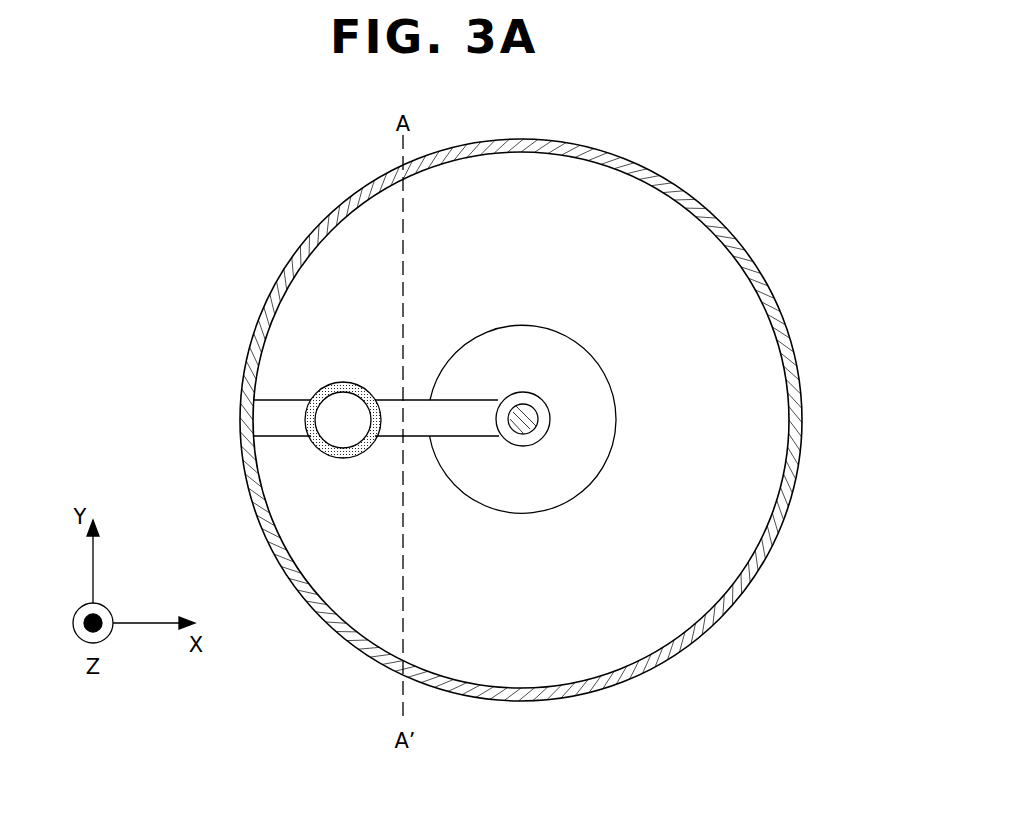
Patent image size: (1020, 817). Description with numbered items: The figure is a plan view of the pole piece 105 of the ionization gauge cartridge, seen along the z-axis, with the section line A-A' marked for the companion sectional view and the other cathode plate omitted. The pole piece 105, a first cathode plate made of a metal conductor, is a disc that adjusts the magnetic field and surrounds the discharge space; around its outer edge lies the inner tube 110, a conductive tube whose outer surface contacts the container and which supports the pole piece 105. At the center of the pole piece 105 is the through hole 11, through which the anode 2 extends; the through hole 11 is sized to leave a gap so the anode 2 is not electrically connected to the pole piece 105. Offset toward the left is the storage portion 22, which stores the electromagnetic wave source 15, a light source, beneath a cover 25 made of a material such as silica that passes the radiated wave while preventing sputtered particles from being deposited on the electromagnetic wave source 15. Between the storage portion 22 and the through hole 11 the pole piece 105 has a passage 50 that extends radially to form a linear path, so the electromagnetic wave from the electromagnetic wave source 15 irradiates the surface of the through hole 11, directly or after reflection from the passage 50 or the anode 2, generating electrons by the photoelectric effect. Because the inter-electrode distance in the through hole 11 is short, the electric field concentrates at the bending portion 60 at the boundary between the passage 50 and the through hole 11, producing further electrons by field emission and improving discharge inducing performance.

The anode 2 is at (520, 410).
The through hole 11 is at (538, 403).
The electromagnetic wave source 15 is at (333, 408).
The storage portion 22 is at (309, 434).
The cover 25 is at (306, 404).
The passage 50 is at (388, 418).
The bending portion 60 is at (498, 396).
The pole piece 105 is at (605, 662).
The inner tube 110 is at (708, 632).